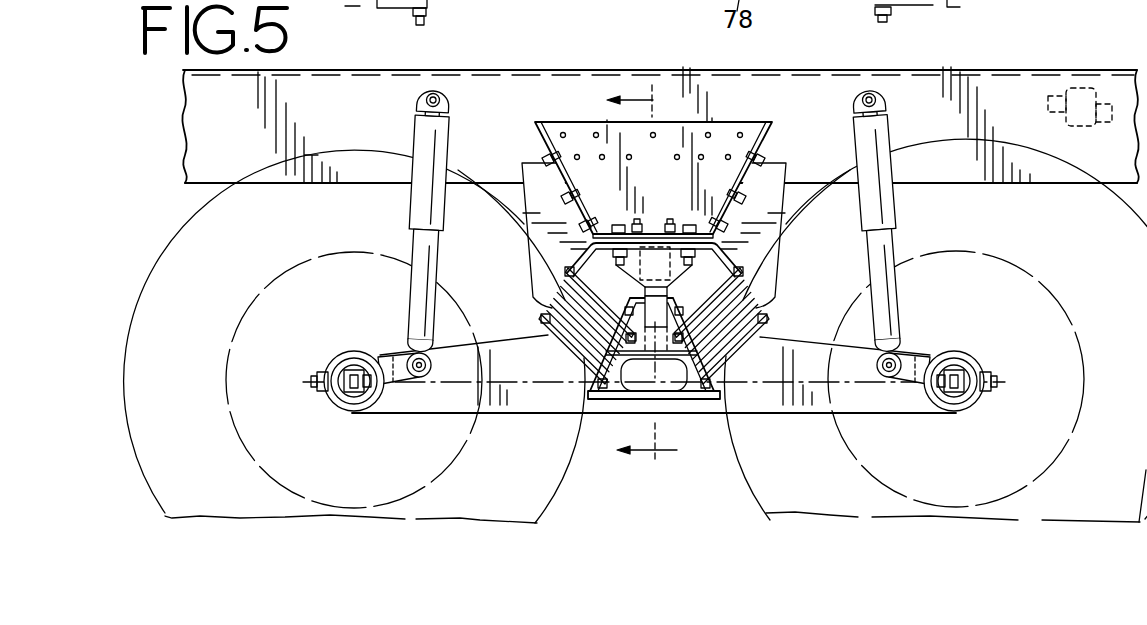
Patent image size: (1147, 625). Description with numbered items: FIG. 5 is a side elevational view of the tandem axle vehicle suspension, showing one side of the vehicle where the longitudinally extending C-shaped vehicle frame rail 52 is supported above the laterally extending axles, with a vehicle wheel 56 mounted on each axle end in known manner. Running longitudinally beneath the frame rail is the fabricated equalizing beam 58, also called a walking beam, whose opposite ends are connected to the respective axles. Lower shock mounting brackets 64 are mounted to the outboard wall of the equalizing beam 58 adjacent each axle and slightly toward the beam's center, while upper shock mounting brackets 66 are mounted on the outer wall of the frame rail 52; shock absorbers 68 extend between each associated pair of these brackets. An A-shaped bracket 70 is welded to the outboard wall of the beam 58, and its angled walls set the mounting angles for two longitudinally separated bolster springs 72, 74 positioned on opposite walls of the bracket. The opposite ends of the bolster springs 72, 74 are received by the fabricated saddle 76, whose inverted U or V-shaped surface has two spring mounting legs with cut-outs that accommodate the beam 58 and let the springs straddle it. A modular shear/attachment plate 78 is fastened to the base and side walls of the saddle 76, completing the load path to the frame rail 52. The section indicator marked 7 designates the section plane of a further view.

The vehicle frame rail 52 is at (783, 88).
The vehicle wheel 56 is at (178, 232).
The equalizing beam 58 is at (630, 450).
The lower shock mounting bracket 64 is at (900, 372).
The upper shock mounting bracket 66 is at (878, 100).
The shock absorber 68 is at (882, 245).
The A-shaped bracket 70 is at (617, 392).
The bolster spring 72 is at (574, 328).
The bolster spring 74 is at (720, 330).
The fabricated saddle 76 is at (760, 265).
The shear/attachment plate 78 is at (697, 133).
The section line 7- 7 is at (642, 281).